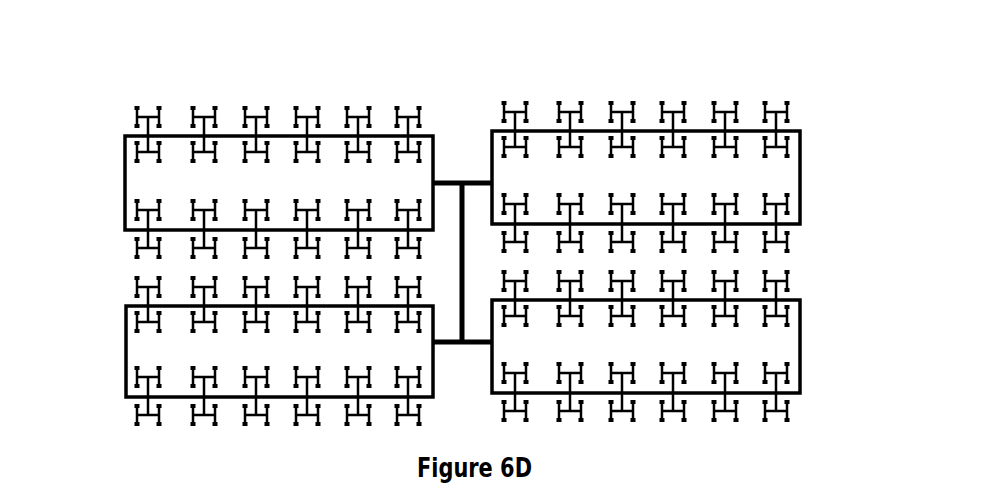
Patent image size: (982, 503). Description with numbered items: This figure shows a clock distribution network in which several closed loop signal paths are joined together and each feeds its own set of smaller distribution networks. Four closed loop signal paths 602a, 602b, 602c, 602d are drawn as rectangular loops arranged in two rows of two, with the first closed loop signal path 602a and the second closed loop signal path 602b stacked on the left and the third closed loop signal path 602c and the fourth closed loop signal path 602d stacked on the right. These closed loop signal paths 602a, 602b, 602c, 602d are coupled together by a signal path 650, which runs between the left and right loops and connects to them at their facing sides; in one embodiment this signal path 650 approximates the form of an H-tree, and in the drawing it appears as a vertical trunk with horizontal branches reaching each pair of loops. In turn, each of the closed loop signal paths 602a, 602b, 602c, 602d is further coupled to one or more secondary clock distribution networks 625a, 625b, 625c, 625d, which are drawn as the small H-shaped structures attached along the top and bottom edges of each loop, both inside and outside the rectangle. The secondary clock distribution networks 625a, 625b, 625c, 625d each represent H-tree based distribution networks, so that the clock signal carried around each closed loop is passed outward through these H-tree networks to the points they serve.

The closed loop signal path 602a is at (125, 178).
The closed loop signal path 602b is at (126, 372).
The closed loop signal path 602c is at (800, 160).
The closed loop signal path 602d is at (800, 350).
The secondary clock distribution network 625a is at (149, 116).
The secondary clock distribution network 625b is at (152, 419).
The secondary clock distribution network 625c is at (772, 111).
The secondary clock distribution network 625d is at (780, 414).
The signal path 650 is at (460, 180).